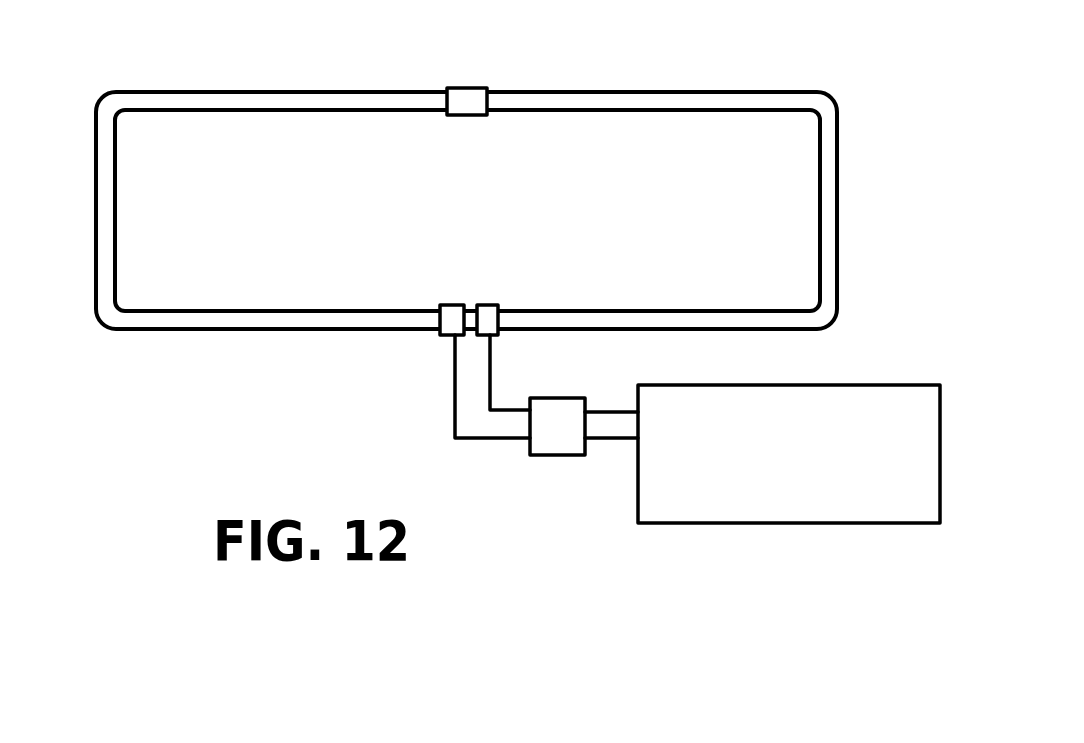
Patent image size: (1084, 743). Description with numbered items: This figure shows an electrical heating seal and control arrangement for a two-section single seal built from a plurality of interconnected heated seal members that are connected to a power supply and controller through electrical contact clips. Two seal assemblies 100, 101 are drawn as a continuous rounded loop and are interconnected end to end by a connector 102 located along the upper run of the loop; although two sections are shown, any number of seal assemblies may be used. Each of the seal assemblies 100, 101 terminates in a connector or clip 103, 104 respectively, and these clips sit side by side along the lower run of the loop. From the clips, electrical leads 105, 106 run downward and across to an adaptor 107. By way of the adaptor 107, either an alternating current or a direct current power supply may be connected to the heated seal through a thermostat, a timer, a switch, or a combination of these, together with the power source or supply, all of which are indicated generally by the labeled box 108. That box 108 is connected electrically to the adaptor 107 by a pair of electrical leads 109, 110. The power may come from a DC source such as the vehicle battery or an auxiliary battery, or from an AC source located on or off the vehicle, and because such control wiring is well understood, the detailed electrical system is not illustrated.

The seal assembly 100 is at (655, 92).
The seal assembly 101 is at (237, 93).
The connector 102 is at (473, 88).
The connector or clip 103 is at (490, 305).
The connector or clip 104 is at (450, 305).
The electrical lead 105 is at (492, 372).
The electrical lead 106 is at (455, 368).
The adaptor 107 is at (553, 433).
The thermostat, timer, switch and power source 108 is at (857, 385).
The electrical lead 109 is at (608, 412).
The electrical lead 110 is at (607, 440).